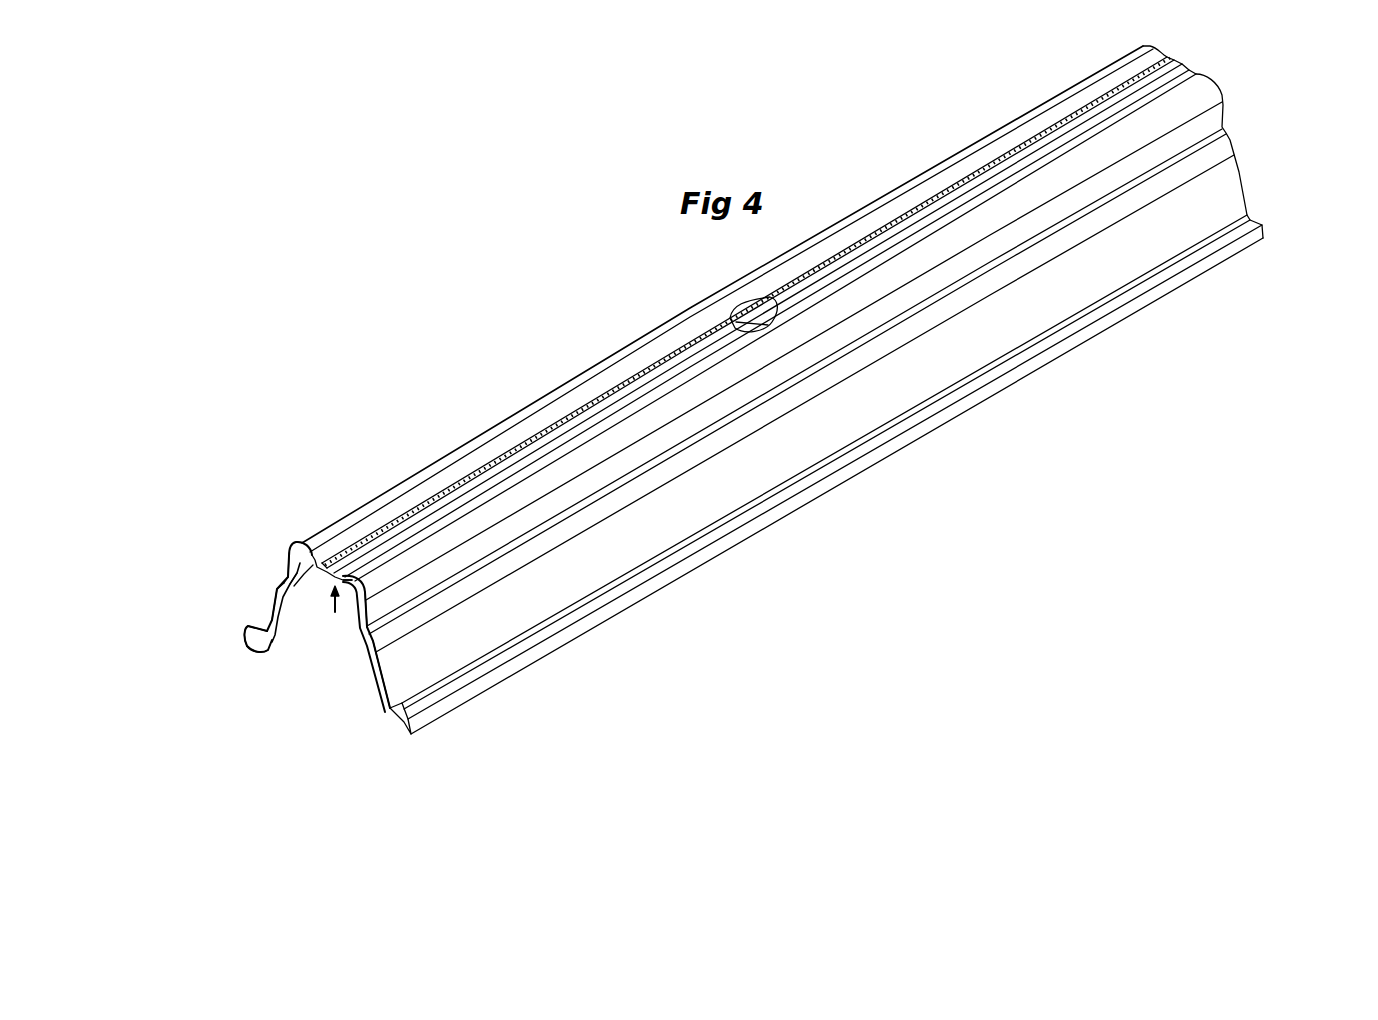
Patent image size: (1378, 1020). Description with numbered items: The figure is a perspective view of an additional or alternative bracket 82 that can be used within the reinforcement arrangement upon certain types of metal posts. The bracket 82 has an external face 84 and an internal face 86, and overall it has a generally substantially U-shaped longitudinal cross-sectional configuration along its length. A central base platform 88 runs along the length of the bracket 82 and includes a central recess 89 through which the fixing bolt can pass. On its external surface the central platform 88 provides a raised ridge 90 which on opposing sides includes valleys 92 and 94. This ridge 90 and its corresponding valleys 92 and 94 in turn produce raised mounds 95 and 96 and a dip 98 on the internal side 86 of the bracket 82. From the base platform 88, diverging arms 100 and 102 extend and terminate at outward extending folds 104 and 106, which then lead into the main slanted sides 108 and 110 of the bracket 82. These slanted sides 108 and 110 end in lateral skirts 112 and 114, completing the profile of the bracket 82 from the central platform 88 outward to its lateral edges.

The bracket 82 is at (892, 132).
The external face 84 is at (753, 315).
The internal face 86 is at (336, 732).
The central base platform 88 is at (633, 382).
The central recess 89 is at (752, 296).
The raised ridge 90 is at (300, 540).
The valley 92 is at (290, 556).
The valley 94 is at (343, 570).
The raised mound 95 is at (320, 579).
The raised mound 96 is at (333, 600).
The dip 98 is at (328, 587).
The diverging arm 100 is at (281, 567).
The diverging arm 102 is at (362, 603).
The outward extending fold 104 is at (265, 596).
The outward extending fold 106 is at (373, 645).
The main slanted side 108 is at (250, 634).
The main slanted side 110 is at (775, 462).
The lateral skirt 112 is at (242, 641).
The lateral skirt 114 is at (1263, 242).